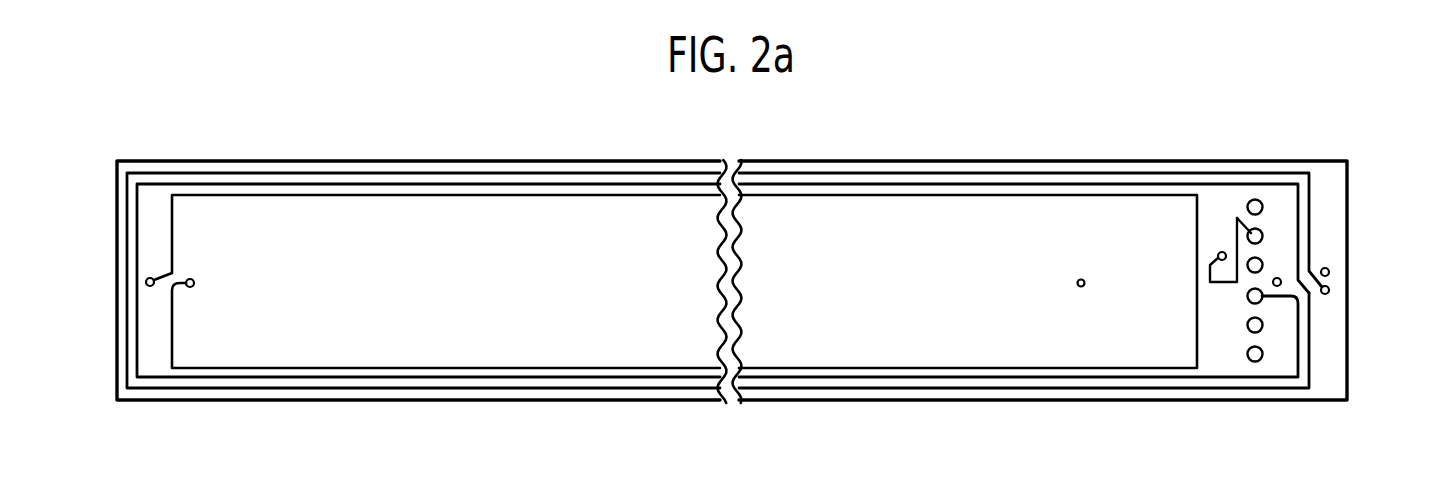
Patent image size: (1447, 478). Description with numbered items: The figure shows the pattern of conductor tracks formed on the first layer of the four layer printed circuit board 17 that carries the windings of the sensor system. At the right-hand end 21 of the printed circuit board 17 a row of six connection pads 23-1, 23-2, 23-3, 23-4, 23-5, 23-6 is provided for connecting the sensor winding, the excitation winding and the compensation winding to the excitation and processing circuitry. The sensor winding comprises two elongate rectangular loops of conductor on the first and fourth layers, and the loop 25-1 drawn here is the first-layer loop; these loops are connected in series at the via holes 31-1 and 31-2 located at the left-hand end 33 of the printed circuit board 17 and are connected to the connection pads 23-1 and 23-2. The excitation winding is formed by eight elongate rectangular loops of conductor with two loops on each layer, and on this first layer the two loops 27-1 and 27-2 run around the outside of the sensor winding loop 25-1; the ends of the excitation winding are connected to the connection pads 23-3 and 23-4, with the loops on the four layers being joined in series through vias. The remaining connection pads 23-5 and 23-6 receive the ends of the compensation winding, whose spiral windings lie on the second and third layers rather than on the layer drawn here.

The printed circuit board 17 is at (642, 160).
The right-hand end 21 is at (771, 286).
The connection pad 23-1 is at (1263, 207).
The connection pad 23-2 is at (1263, 236).
The connection pad 23-3 is at (1263, 265).
The connection pad 23-4 is at (1263, 296).
The connection pad 23-5 is at (1263, 325).
The connection pad 23-6 is at (1263, 354).
The sensor winding loop 25-1 is at (792, 193).
The excitation winding loop 27-1 is at (950, 172).
The excitation winding loop 27-2 is at (1038, 184).
The via hole 31-1 is at (193, 286).
The via hole 31-2 is at (154, 279).
The left-hand end 33 is at (206, 355).